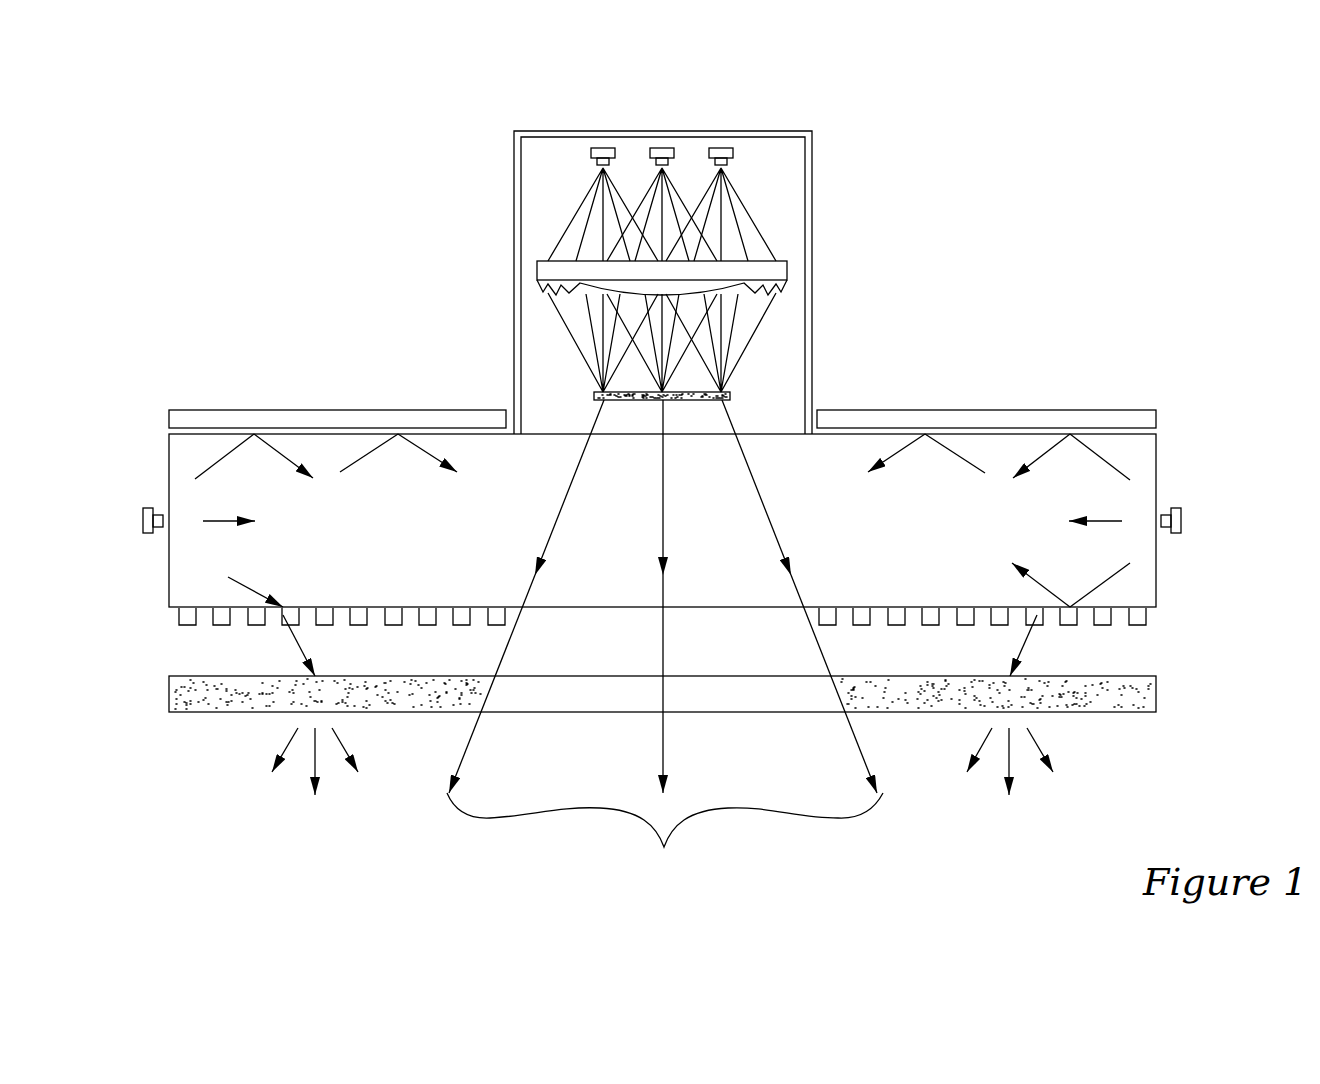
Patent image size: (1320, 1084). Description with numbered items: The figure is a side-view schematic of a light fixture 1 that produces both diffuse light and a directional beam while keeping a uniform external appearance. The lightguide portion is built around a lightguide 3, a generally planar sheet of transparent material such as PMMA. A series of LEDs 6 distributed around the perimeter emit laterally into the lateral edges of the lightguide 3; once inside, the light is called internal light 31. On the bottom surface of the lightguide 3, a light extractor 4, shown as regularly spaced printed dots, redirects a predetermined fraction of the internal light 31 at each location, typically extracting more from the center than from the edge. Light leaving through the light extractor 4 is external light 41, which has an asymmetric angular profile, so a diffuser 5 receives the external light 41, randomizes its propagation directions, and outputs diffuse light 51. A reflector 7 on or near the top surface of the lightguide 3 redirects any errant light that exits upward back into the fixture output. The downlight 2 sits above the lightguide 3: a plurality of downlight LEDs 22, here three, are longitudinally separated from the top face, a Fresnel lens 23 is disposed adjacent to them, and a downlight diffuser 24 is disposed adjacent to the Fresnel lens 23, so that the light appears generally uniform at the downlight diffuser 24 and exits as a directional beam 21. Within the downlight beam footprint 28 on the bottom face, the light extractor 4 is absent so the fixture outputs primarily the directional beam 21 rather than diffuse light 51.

The light fixture 1 is at (1090, 143).
The downlight 2 is at (812, 168).
The downlight LEDs 22 is at (603, 147).
The Fresnel lens 23 is at (790, 262).
The downlight diffuser 24 is at (730, 393).
The directional beam 21 is at (468, 744).
The downlight beam footprint 28 is at (665, 834).
The reflector 7 is at (338, 410).
The lightguide 3 is at (169, 452).
The internal light 31 is at (357, 459).
The light extractor 4 is at (180, 617).
The external light 41 is at (297, 643).
The diffuser 5 is at (181, 691).
The diffuse light 51 is at (313, 763).
The LEDs 6 is at (143, 517).